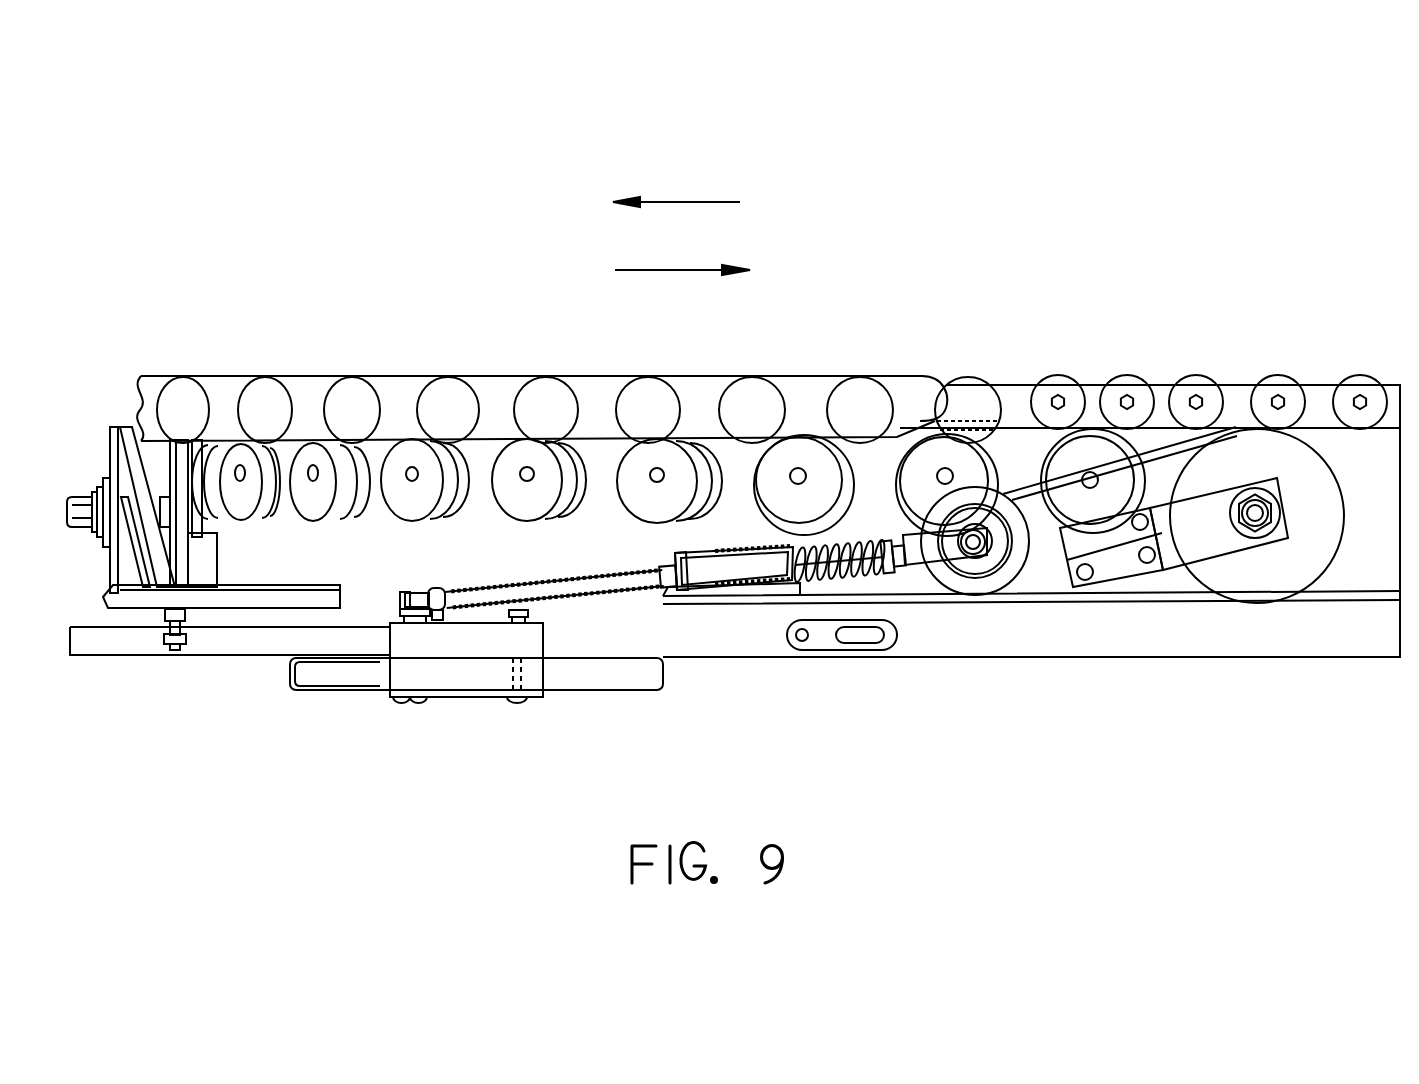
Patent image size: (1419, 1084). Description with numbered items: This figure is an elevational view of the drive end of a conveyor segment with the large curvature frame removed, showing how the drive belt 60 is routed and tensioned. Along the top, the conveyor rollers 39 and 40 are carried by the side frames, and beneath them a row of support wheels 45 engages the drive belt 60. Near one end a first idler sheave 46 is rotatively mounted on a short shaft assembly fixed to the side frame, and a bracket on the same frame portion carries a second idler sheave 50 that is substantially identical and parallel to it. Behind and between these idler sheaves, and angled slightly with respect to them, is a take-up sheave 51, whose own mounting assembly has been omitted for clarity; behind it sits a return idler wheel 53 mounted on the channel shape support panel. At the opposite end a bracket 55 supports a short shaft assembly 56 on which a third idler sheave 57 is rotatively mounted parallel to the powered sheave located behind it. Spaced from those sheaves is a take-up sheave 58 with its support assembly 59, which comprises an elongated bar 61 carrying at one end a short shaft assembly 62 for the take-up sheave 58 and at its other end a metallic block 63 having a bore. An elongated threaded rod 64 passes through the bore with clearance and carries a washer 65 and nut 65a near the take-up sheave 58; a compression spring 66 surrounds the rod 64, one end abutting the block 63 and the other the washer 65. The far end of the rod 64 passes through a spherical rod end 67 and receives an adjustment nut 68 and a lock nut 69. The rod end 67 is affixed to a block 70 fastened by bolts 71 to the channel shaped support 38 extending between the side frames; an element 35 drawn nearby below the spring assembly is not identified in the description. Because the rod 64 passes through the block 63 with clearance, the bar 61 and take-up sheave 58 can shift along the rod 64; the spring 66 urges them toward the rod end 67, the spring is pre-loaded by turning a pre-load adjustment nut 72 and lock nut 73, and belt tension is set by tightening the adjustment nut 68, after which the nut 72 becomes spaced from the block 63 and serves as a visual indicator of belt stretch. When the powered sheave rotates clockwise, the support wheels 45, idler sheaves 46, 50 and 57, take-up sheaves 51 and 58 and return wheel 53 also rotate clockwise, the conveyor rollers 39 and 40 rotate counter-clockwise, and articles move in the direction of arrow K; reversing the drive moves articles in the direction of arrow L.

The slotted link 35 is at (845, 637).
The channel shaped support 38 is at (600, 683).
The conveyor rollers 39 is at (1195, 382).
The conveyor rollers 40 is at (183, 390).
The support wheels 45 is at (310, 507).
The first idler sheave 46 is at (195, 472).
The second idler sheave 50 is at (110, 465).
The take-up sheave 51 is at (143, 557).
The return idler wheel 53 is at (217, 582).
The bracket 55 is at (1202, 543).
The short shaft assembly 56 is at (1270, 505).
The third idler sheave 57 is at (1297, 577).
The take-up sheave 58 is at (972, 575).
The support assembly 59 is at (743, 582).
The drive belt 60 is at (1021, 430).
The elongated bar 61 is at (917, 557).
The short shaft assembly 62 is at (1013, 558).
The metallic block 63 is at (700, 545).
The threaded rod 64 is at (603, 597).
The washer 65 is at (809, 578).
The nut 65a is at (888, 567).
The compression spring 66 is at (835, 547).
The spherical rod end 67 is at (447, 598).
The adjustment nut 68 is at (423, 592).
The lock nut 69 is at (405, 597).
The block 70 is at (460, 647).
The bolts 71 is at (527, 610).
The pre-load adjustment nut 72 is at (667, 558).
The lock nut 73 is at (662, 566).
The arrow K is at (675, 202).
The arrow L is at (663, 270).